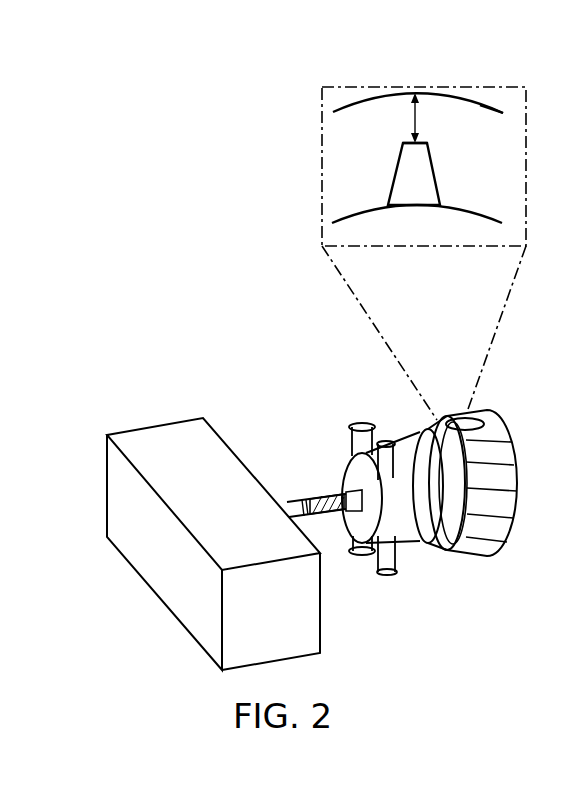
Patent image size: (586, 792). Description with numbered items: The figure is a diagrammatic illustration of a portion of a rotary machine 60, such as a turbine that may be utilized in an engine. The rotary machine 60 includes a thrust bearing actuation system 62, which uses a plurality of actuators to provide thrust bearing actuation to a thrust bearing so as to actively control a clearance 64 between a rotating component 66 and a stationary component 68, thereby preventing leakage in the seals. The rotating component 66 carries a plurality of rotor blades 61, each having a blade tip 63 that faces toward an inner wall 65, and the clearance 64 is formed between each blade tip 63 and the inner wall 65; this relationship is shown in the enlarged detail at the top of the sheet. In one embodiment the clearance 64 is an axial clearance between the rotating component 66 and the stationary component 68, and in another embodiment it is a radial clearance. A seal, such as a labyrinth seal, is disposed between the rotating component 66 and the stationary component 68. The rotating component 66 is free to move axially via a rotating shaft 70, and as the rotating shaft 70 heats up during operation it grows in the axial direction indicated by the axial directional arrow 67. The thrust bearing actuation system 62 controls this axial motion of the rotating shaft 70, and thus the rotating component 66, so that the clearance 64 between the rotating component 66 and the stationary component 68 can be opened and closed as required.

The rotary machine 60 is at (131, 190).
The rotor blades 61 is at (378, 198).
The thrust bearing actuation system 62 is at (146, 426).
The blade tip 63 is at (410, 139).
The clearance 64 is at (422, 118).
The inner wall 65 is at (483, 108).
The rotating component 66 is at (435, 183).
The axial directional arrow 67 is at (333, 514).
The stationary component 68 is at (457, 98).
The rotating shaft 70 is at (293, 501).